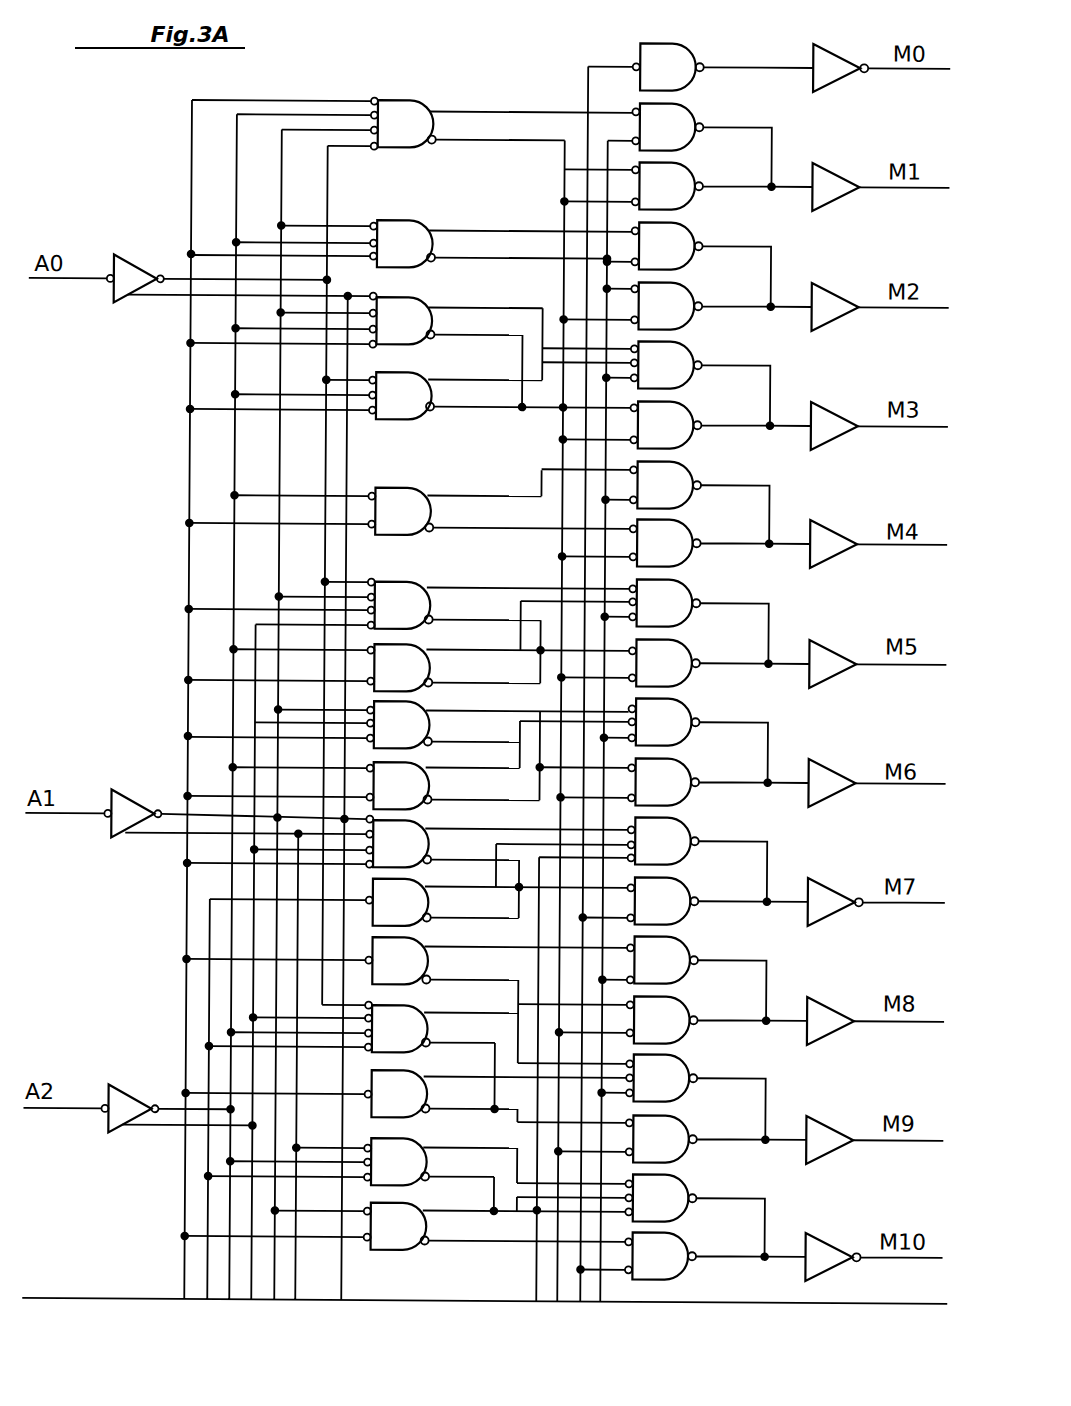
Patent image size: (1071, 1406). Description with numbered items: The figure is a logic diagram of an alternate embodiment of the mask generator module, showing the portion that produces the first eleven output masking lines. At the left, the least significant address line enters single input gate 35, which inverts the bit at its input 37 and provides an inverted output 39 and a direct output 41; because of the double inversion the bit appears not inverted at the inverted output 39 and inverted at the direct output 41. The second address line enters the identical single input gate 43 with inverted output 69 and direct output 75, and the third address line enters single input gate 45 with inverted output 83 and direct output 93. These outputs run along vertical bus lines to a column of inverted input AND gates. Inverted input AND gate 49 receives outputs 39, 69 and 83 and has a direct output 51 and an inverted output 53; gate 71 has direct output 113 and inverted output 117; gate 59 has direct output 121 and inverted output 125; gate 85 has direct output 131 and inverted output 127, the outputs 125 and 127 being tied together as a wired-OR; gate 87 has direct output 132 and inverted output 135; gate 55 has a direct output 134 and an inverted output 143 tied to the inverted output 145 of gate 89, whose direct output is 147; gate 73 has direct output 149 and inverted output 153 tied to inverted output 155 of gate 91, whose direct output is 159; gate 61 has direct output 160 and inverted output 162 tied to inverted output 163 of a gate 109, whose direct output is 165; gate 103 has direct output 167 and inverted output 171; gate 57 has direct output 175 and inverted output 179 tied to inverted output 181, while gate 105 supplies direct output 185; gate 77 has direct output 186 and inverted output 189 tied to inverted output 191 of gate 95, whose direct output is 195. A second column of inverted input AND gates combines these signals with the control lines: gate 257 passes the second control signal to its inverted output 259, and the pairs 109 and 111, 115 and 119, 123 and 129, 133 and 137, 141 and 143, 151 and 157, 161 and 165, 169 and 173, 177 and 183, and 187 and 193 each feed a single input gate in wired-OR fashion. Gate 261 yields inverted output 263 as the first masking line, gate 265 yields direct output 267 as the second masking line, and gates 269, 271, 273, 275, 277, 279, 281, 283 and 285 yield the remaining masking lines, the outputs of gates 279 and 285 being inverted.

The single input gate 35 is at (136, 256).
The input 37 is at (76, 283).
The inverted output 39 is at (170, 277).
The direct output 41 is at (158, 299).
The single input gate 43 is at (121, 791).
The inverted output 69 is at (165, 812).
The direct output 75 is at (151, 837).
The single input gate 45 is at (120, 1086).
The inverted output 83 is at (158, 1107).
The direct output 93 is at (150, 1129).
The inverted input AND gate 49 is at (408, 100).
The direct output 51 is at (477, 110).
The inverted output 53 is at (485, 142).
The inverted input AND gate 71 is at (403, 220).
The direct output 113 is at (478, 229).
The inverted output 117 is at (490, 259).
The inverted input AND gate 59 is at (428, 300).
The direct output 121 is at (467, 306).
The inverted output 125 is at (522, 372).
The inverted input AND gate 85 is at (420, 420).
The direct output 131 is at (467, 378).
The inverted output 127 is at (490, 408).
The inverted input AND gate 87 is at (432, 488).
The direct output 132 is at (522, 491).
The inverted output 135 is at (527, 529).
The inverted input AND gate 55 is at (420, 582).
The gate output line 134 is at (487, 586).
The inverted output / inverted input AND gate 143 is at (488, 619).
The inverted input AND gate 89 is at (433, 667).
The direct output 147 is at (488, 648).
The inverted output 145 is at (522, 681).
The inverted input AND gate 73 is at (433, 725).
The direct output 149 is at (500, 708).
The inverted output 153 is at (510, 740).
The inverted input AND gate 91 is at (433, 785).
The direct output 159 is at (490, 767).
The inverted output 155 is at (518, 798).
The inverted input AND gate 61 is at (433, 843).
The direct output 160 is at (517, 827).
The inverted output 162 is at (470, 858).
The inverted input AND gate 109 is at (433, 902).
The inverted input AND gate / direct output 165 is at (487, 885).
The inverted output 163 is at (515, 916).
The inverted input AND gate 103 is at (433, 960).
The direct output 167 is at (506, 945).
The inverted output 171 is at (518, 978).
The inverted input AND gate 57 is at (433, 1028).
The direct output 175 is at (478, 1011).
The inverted output 179 is at (502, 1026).
The inverted input AND gate 105 is at (433, 1094).
The direct output 185 is at (478, 1075).
The inverted output 181 is at (522, 1108).
The inverted input AND gate 77 is at (433, 1161).
The direct output 186 is at (476, 1146).
The inverted output 189 is at (503, 1169).
The inverted input AND gate 95 is at (416, 1249).
The direct output 195 is at (468, 1209).
The inverted output 191 is at (495, 1244).
The single inverted input gate 257 is at (688, 50).
The inverted output 259 is at (757, 63).
The single inverted input gate 261 is at (840, 50).
The inverted output 263 is at (878, 68).
The inverted input AND gate 111 is at (690, 177).
The single inverted input gate 265 is at (840, 172).
The direct output 267 is at (878, 187).
The inverted input AND gate 115 is at (690, 236).
The inverted input AND gate 119 is at (690, 296).
The single inverted input gate 269 is at (843, 292).
The inverted input AND gate 123 is at (690, 356).
The inverted input gate 129 is at (690, 416).
The single inverted input gate 271 is at (838, 410).
The inverted input AND gate 133 is at (690, 476).
The inverted input AND gate 137 is at (690, 536).
The single inverted input gate 273 is at (838, 527).
The inverted input AND gate 141 is at (690, 596).
The single inverted input gate 275 is at (833, 648).
The inverted input AND gate 151 is at (690, 715).
The inverted input AND gate 157 is at (690, 774).
The single input gate 277 is at (838, 768).
The inverted input AND gate 161 is at (690, 834).
The single input gate 279 is at (835, 886).
The inverted input AND gate 169 is at (690, 954).
The inverted input AND gate 173 is at (690, 1012).
The single inverted input gate 281 is at (835, 1005).
The inverted input AND gate 177 is at (690, 1071).
The inverted input AND gate 183 is at (690, 1130).
The single inverted input gate 283 is at (828, 1125).
The inverted input AND gate 187 is at (690, 1189).
The inverted input AND gate 193 is at (690, 1248).
The single inverted input gate 285 is at (828, 1242).